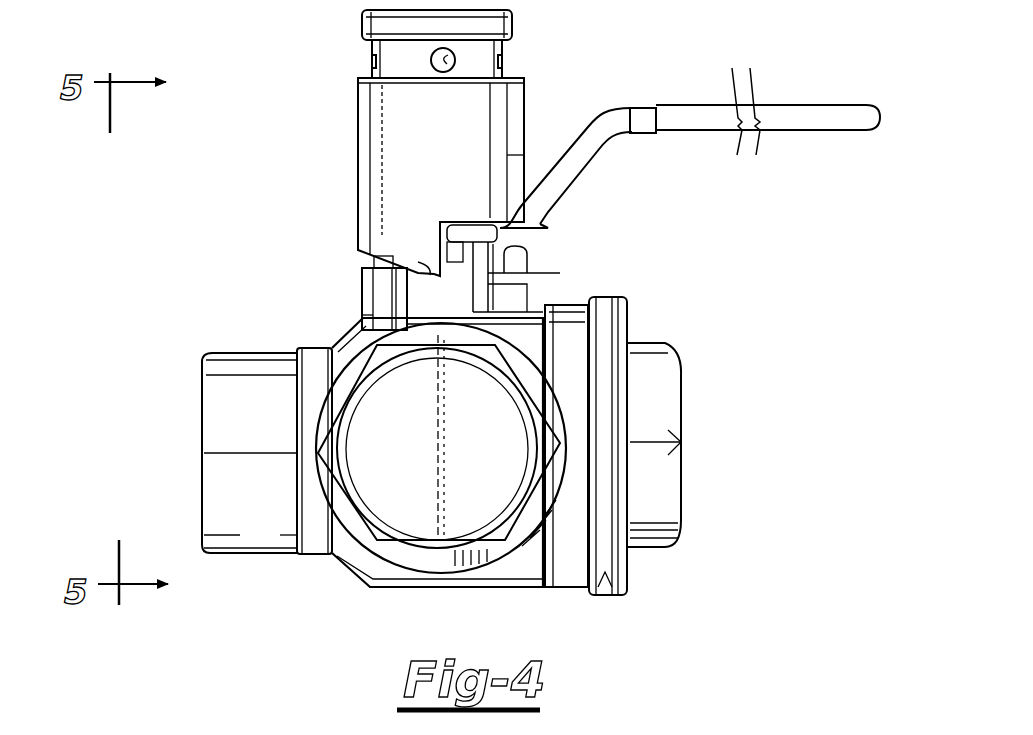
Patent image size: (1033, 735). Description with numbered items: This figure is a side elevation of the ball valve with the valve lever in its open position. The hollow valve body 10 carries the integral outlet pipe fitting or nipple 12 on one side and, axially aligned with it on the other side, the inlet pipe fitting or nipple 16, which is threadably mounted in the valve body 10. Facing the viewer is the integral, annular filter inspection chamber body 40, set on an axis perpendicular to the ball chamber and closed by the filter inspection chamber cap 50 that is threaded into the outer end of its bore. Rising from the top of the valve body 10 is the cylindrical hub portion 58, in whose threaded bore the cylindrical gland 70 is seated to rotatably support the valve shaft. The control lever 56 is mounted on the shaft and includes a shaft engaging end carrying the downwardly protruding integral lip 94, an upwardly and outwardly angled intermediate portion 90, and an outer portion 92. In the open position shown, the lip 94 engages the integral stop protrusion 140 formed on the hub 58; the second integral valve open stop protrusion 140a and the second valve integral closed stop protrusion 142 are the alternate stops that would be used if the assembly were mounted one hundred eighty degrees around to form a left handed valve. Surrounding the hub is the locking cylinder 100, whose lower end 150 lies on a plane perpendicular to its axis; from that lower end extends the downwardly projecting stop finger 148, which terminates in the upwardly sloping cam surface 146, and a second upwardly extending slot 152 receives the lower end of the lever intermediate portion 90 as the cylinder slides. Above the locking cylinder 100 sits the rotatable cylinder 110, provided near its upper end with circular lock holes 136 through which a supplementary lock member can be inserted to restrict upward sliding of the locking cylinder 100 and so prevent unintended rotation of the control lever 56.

The hollow valve body 10 is at (388, 568).
The integral outlet pipe fitting or nipple 12 is at (262, 520).
The inlet pipe fitting or nipple 16 is at (615, 595).
The filter inspection chamber body 40 is at (432, 562).
The filter inspection chamber cap 50 is at (408, 507).
The control lever 56 is at (734, 96).
The cylindrical hub portion 58 is at (548, 273).
The cylindrical gland 70 is at (498, 240).
The intermediate portion of the control lever 90 is at (568, 165).
The control lever portion 92 is at (658, 113).
The integral lip 94 is at (365, 255).
The locking cylinder 100 is at (356, 136).
The rotatable cylinder 110 is at (358, 30).
The circular lock holes 136 is at (372, 62).
The integral stop protrusion 140 is at (362, 290).
The second integral valve open stop protrusion 140a is at (500, 284).
The second valve integral closed stop protrusion 142 is at (405, 300).
The cam surface 146 is at (425, 275).
The stop finger 148 is at (462, 224).
The lower end of the locking cylinder 150 is at (560, 226).
The second upwardly extending slot 152 is at (406, 163).